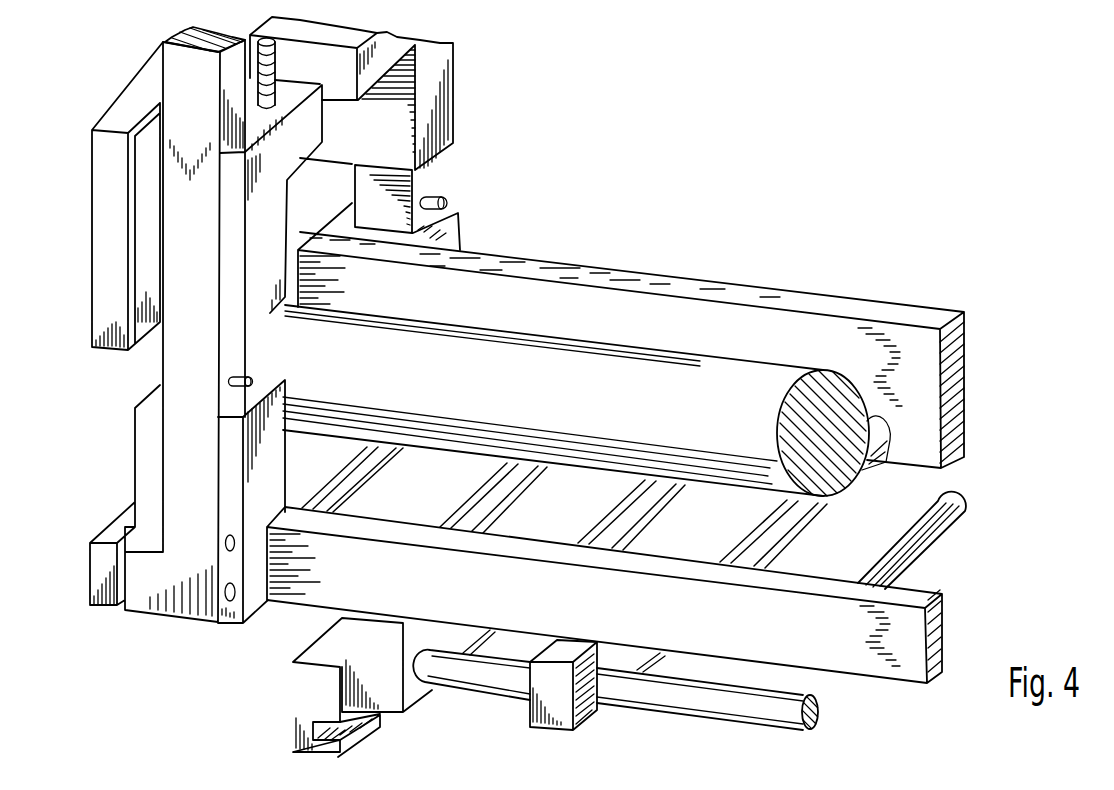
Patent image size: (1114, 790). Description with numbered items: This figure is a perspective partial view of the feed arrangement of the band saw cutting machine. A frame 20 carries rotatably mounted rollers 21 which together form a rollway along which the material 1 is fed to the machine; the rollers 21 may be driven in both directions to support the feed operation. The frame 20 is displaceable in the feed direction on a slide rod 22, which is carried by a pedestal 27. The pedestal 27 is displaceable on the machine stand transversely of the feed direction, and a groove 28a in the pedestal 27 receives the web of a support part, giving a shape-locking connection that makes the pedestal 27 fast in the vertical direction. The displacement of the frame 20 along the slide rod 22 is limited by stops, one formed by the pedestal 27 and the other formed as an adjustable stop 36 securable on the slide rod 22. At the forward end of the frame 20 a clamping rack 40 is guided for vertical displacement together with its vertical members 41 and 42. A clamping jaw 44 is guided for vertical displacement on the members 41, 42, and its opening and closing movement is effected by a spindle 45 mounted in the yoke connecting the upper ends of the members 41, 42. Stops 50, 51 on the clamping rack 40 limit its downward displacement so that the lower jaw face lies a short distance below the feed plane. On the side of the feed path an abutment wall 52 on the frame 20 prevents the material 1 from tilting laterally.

The material 1 is at (770, 373).
The frame 20 is at (500, 620).
The rollers 21 is at (950, 507).
The slide rod 22 is at (819, 711).
The pedestal 27 is at (307, 687).
The groove 28a is at (313, 728).
The adjustable stop 36 is at (530, 706).
The clamping rack 40 is at (122, 373).
The vertical member 41 is at (177, 428).
The vertical member 42 is at (397, 198).
The clamping jaw 44 is at (97, 153).
The spindle 45 is at (257, 67).
The stop 50 is at (237, 378).
The stop 51 is at (446, 199).
The abutment wall 52 is at (613, 298).